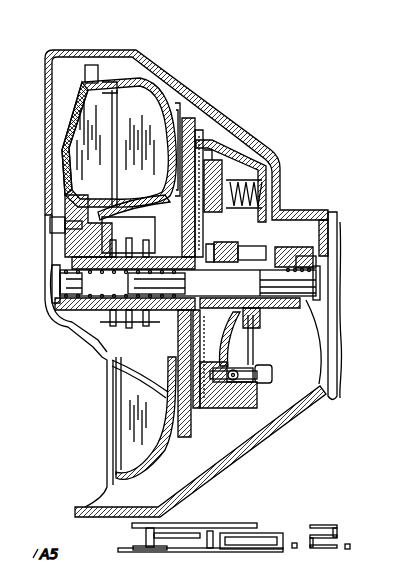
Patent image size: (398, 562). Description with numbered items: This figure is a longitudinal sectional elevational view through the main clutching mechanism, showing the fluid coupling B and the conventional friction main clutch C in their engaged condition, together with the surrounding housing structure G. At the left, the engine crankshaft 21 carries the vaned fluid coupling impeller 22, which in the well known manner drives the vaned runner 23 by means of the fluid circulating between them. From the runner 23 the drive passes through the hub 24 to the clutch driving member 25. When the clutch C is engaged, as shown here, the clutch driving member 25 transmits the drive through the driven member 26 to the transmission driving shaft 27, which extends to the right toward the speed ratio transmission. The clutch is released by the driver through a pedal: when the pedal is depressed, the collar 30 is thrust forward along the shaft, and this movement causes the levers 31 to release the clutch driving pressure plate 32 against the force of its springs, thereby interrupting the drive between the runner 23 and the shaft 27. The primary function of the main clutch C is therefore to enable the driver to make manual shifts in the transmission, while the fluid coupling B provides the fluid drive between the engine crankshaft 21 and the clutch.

The fluid coupling B is at (155, 90).
The friction main clutch C is at (243, 144).
The housing G is at (172, 283).
The engine crankshaft 21 is at (46, 248).
The fluid coupling impeller 22 is at (62, 145).
The runner 23 is at (115, 222).
The hub 24 is at (120, 275).
The clutch driving member 25 is at (200, 144).
The driven member 26 is at (213, 233).
The transmission driving shaft 27 is at (290, 262).
The collar 30 is at (272, 318).
The levers 31 is at (237, 350).
The clutch driving pressure plate 32 is at (263, 390).